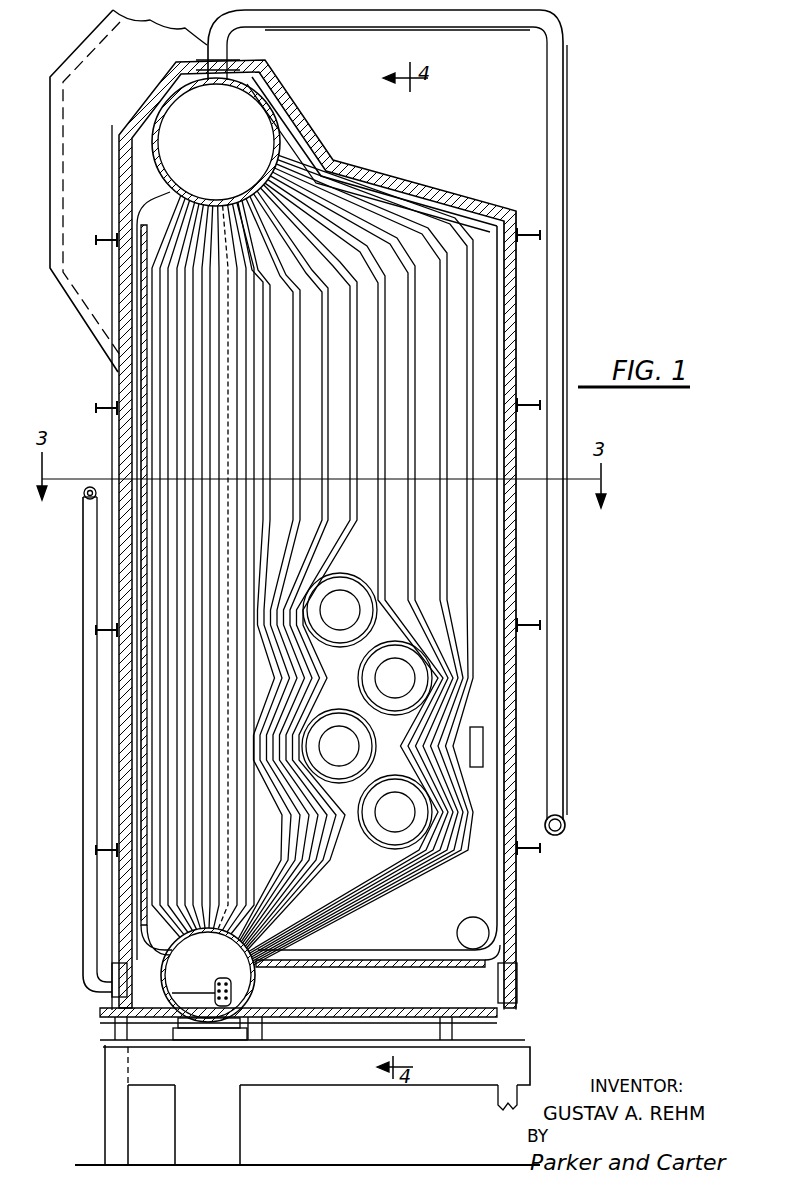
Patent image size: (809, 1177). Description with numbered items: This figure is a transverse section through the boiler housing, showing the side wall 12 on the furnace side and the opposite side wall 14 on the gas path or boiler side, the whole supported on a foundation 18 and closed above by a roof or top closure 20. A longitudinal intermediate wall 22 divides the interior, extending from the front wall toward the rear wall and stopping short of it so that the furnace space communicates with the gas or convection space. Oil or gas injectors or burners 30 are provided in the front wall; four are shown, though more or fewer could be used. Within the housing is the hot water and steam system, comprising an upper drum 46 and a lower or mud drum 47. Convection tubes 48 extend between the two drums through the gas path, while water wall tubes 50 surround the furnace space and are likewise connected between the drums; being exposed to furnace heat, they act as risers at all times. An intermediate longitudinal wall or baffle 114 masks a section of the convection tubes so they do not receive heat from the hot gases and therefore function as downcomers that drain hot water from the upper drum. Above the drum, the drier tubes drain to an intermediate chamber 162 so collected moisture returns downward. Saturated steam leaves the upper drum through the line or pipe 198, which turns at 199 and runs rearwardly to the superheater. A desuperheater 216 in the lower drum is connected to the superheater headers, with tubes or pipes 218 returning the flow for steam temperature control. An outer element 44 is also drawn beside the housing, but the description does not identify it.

The side wall 12 is at (506, 527).
The side wall 14 is at (128, 458).
The foundation 18 is at (520, 1063).
The roof or top closure 20 is at (358, 170).
The longitudinal intermediate wall 22 is at (246, 493).
The oil or gas injectors or burners 30 is at (345, 735).
The shield panel 44 is at (75, 163).
The upper drum 46 is at (258, 123).
The lower or mud drum 47 is at (236, 993).
The convection tubes 48 is at (165, 660).
The water wall tubes 50 is at (466, 400).
The intermediate longitudinal wall or baffle 114 is at (147, 441).
The intermediate chamber 162 is at (216, 82).
The line or pipe 198 is at (352, 20).
The turn of the line 199 is at (566, 825).
The desuperheater 216 is at (226, 976).
The tubes or pipes 218 is at (88, 742).